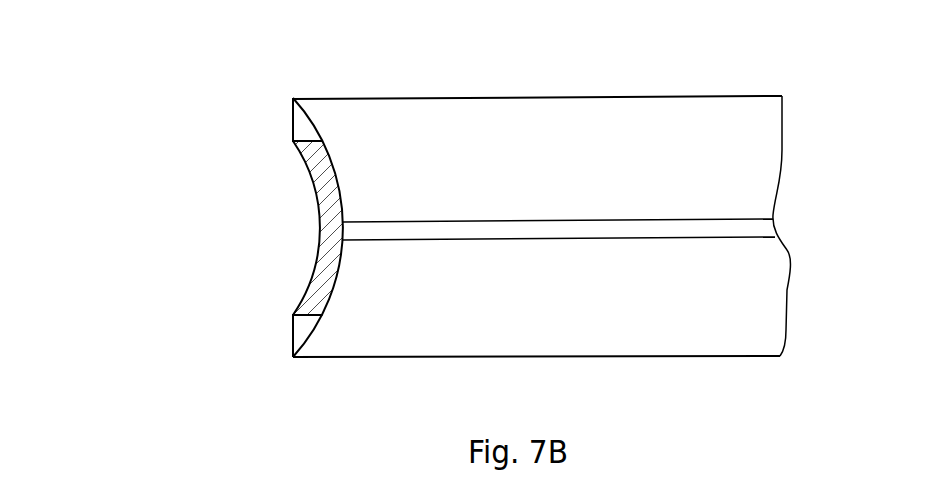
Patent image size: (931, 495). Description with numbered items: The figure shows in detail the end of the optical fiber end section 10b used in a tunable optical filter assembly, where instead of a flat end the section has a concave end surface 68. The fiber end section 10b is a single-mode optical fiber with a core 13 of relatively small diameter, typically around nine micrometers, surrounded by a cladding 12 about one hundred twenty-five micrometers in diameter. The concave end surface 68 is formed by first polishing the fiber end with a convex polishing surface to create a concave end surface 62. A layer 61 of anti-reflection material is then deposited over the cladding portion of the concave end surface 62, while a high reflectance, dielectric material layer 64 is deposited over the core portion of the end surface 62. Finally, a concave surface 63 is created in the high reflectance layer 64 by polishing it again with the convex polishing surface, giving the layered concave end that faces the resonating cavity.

The optical fiber end section 10b is at (473, 82).
The cladding 12 is at (565, 340).
The core 13 is at (588, 228).
The layer of anti-reflection material 61 is at (300, 128).
The concave end surface 62 is at (339, 190).
The concave surface 63 is at (318, 263).
The high reflectance dielectric material layer 64 is at (327, 202).
The concave end surface 68 is at (141, 151).